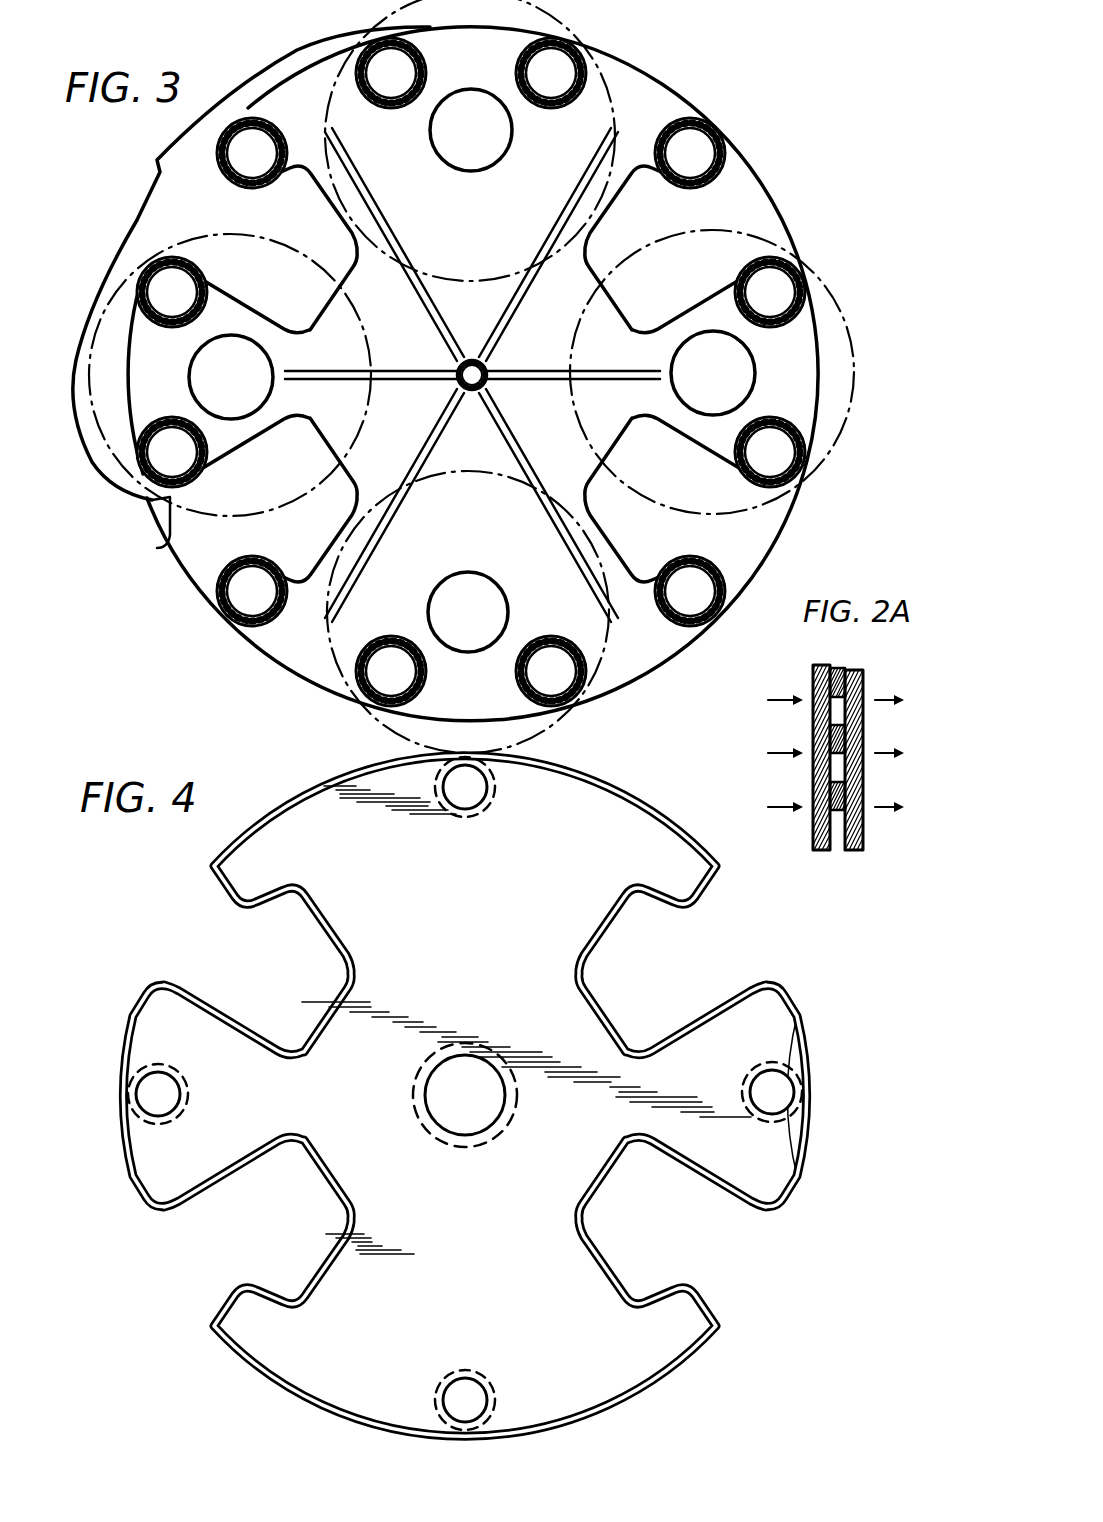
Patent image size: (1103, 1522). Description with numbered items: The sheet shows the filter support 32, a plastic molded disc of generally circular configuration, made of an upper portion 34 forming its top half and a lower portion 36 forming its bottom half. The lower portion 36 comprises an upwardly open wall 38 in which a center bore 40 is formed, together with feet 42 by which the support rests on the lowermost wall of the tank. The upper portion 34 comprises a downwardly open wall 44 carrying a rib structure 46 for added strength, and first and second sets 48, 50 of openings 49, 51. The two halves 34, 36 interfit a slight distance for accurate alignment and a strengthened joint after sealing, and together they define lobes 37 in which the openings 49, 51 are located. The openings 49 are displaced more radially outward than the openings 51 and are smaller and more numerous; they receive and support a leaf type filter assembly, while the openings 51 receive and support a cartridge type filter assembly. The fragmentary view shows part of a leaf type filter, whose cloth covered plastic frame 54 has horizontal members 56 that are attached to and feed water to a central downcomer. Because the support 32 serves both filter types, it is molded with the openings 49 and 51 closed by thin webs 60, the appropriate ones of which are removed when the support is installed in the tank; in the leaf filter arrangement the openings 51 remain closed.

In FIG. 3, the filter support 32 is at (183, 628).
In FIG. 4, the filter support 32 is at (178, 901).
In FIG. 3, the upper portion 34 is at (670, 92).
In FIG. 4, the lower portion 36 is at (730, 987).
In FIG. 3, the lobes 37 is at (145, 534).
In FIG. 4, the lobes 37 is at (805, 1077).
In FIG. 4, the upwardly open wall 38 is at (786, 1153).
In FIG. 4, the center bore 40 is at (458, 1134).
In FIG. 4, the feet 42 is at (148, 1060).
In FIG. 3, the downwardly open wall 44 is at (640, 417).
In FIG. 3, the rib structure 46 is at (518, 370).
In FIG. 3, the first set of openings 48 is at (158, 170).
In FIG. 3, the openings 49 is at (582, 56).
In FIG. 3, the second set of openings 50 is at (566, 185).
In FIG. 3, the openings 51 is at (483, 171).
In FIG. 2A, the plastic frame 54 is at (907, 670).
In FIG. 2A, the horizontal members 56 is at (827, 802).
In FIG. 3, the thin webs 60 is at (486, 630).